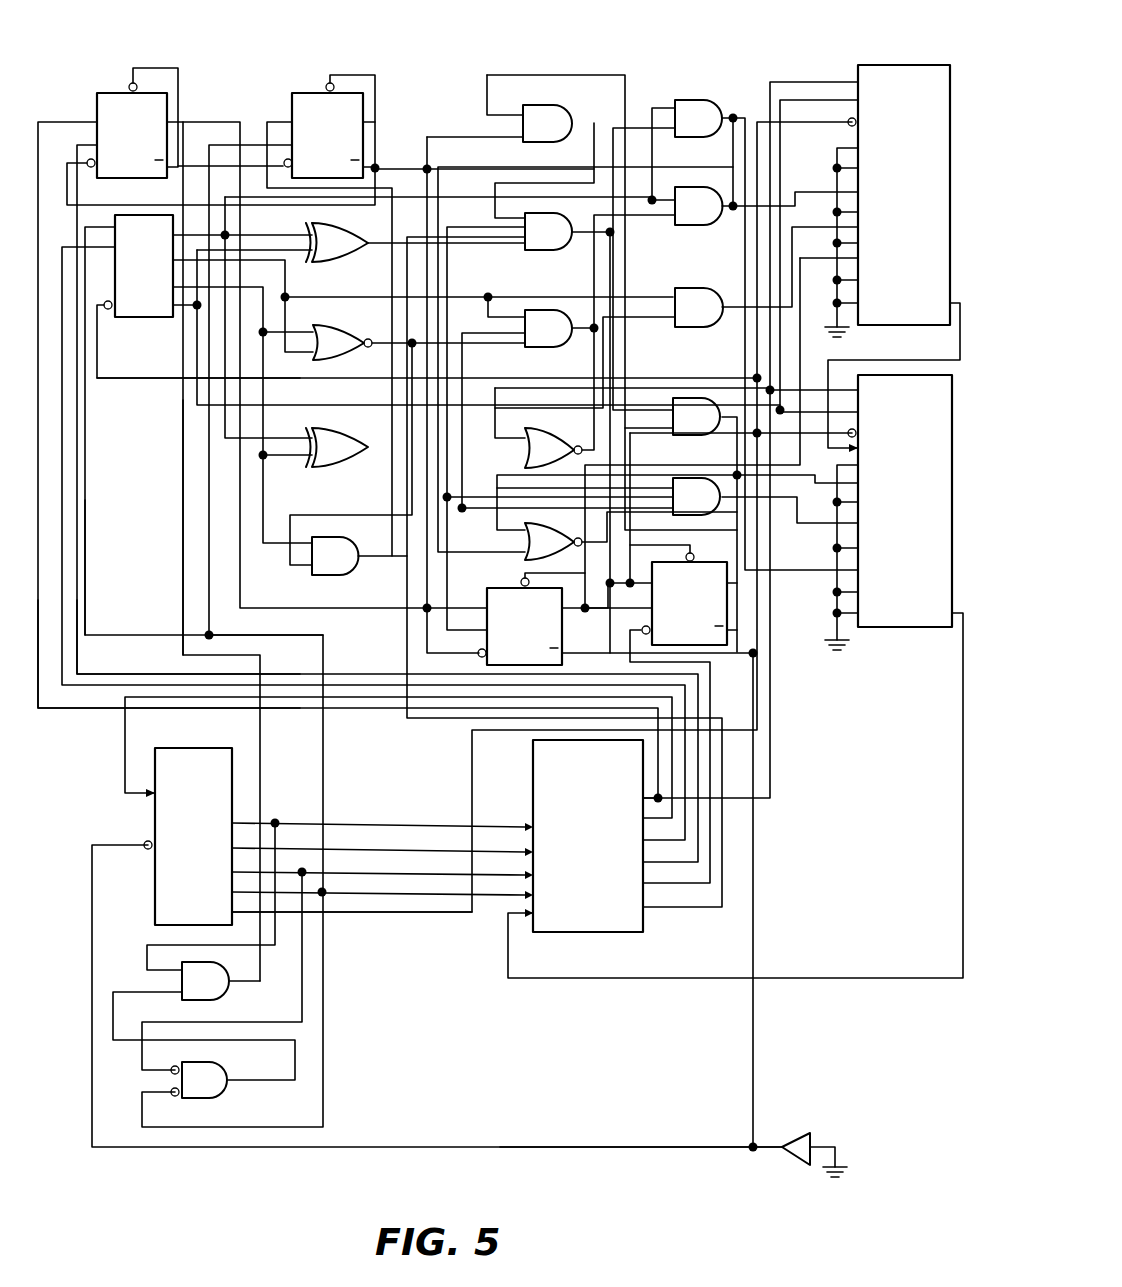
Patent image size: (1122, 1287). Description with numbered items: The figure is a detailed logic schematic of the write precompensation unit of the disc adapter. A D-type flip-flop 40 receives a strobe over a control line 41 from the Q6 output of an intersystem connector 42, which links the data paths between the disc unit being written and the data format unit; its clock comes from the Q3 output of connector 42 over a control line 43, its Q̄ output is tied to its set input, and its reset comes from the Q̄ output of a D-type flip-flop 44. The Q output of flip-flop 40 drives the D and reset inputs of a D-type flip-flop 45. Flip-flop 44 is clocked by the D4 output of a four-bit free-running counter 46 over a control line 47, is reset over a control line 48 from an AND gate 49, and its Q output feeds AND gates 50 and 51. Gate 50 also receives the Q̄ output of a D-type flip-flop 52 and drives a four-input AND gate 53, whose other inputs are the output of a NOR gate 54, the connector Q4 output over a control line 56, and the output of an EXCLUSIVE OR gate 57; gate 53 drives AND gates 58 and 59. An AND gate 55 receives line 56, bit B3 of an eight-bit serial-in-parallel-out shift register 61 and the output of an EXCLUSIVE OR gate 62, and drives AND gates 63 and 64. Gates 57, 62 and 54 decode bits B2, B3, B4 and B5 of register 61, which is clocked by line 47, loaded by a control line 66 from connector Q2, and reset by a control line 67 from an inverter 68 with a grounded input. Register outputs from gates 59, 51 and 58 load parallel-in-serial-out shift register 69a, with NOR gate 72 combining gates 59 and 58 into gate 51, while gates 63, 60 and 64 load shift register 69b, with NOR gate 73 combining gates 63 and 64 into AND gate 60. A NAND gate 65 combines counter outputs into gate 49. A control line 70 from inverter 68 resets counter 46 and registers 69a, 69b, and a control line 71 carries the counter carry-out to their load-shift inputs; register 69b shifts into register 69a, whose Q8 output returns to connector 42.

The D-type flip-flop 40 is at (126, 88).
The D-type flip-flop 44 is at (321, 91).
The eight bit serial-in-parallel-out shift register 61 is at (128, 318).
The AND gate 50 is at (550, 108).
The AND gate 53 is at (538, 252).
The AND gate 55 is at (533, 348).
The AND gate 58 is at (690, 100).
The AND gate 63 is at (682, 226).
The AND gate 60 is at (696, 288).
The AND gate 59 is at (678, 436).
The AND gate 51 is at (706, 513).
The AND gate 64 is at (343, 574).
The AND gate 49 is at (222, 998).
The NAND gate 65 is at (220, 1097).
The EXCLUSIVE OR gate 57 is at (342, 262).
The EXCLUSIVE OR gate 62 is at (335, 432).
The NOR gate 54 is at (340, 328).
The NOR gate 73 is at (540, 430).
The NOR gate 72 is at (558, 536).
The control line 56 is at (412, 643).
The D-type flip-flop 45 is at (564, 653).
The D-type flip-flop 52 is at (712, 552).
The eight bit parallel-in-serial-out shift register 69a is at (885, 628).
The eight bit parallel-in-serial-out shift register 69b is at (918, 62).
The four-bit free-running counter 46 is at (192, 748).
The intersystem connector 42 is at (590, 932).
The inverter 68 is at (795, 1135).
The control line 41 is at (90, 715).
The control line 43 is at (110, 676).
The control line 47 is at (272, 635).
The control line 48 is at (183, 508).
The control line 66 is at (60, 598).
The control line 67 is at (145, 378).
The control line 70 is at (592, 1147).
The control line 71 is at (430, 922).